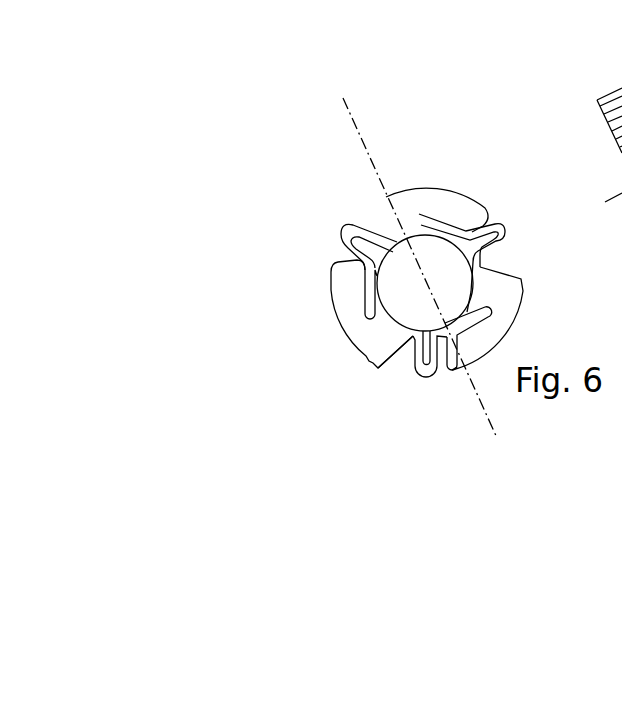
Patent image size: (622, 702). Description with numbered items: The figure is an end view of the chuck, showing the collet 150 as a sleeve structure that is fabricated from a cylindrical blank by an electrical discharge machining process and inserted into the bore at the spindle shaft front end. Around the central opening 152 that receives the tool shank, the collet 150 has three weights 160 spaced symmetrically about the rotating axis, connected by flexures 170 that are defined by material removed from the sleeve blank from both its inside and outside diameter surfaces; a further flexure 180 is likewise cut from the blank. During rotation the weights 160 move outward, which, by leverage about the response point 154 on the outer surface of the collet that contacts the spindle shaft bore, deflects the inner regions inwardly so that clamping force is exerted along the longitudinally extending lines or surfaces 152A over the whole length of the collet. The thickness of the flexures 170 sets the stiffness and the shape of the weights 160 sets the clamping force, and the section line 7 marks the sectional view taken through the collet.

The section line 7- 7 is at (343, 98).
The collet 150 is at (323, 345).
The central opening 152 is at (405, 278).
The longitudinally extending lines or surfaces 152A is at (420, 228).
The response point 154 is at (376, 371).
The weights 160 is at (327, 288).
The flexures 170 is at (340, 232).
The resilient finger 180 is at (412, 337).